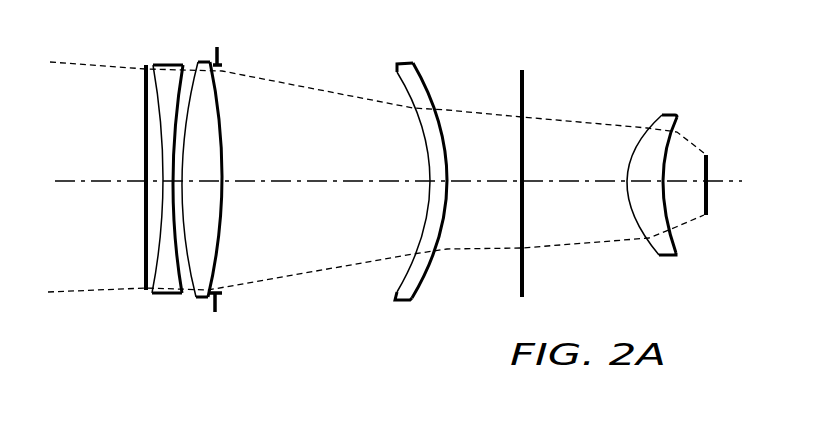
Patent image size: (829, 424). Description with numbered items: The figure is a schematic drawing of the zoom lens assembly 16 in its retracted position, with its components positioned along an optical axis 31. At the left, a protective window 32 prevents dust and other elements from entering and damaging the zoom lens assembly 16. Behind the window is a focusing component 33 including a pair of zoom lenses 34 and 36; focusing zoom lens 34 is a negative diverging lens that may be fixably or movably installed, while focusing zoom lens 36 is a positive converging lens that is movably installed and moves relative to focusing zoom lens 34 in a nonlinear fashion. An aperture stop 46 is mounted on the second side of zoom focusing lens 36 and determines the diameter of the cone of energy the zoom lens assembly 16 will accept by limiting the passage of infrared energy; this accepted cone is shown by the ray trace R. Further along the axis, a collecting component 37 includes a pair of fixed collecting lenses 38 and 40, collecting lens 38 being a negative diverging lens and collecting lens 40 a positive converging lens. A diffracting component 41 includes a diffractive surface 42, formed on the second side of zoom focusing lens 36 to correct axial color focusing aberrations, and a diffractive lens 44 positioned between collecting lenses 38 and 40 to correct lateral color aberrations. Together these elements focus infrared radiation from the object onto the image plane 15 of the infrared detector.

The image plane 15 is at (711, 167).
The zoom lens assembly 16 is at (656, 61).
The optical axis 31 is at (62, 178).
The protective window 32 is at (146, 63).
The focusing component 33 is at (325, 312).
The focusing zoom lens 34 is at (163, 295).
The focusing zoom lens 36 is at (203, 299).
The collecting component 37 is at (589, 270).
The collecting lens 38 is at (408, 62).
The collecting lens 40 is at (679, 125).
The diffracting component 41 is at (128, 58).
The diffractive surface 42 is at (222, 125).
The diffractive lens 44 is at (525, 88).
The aperture stop 46 is at (220, 65).
The ray trace R is at (68, 292).